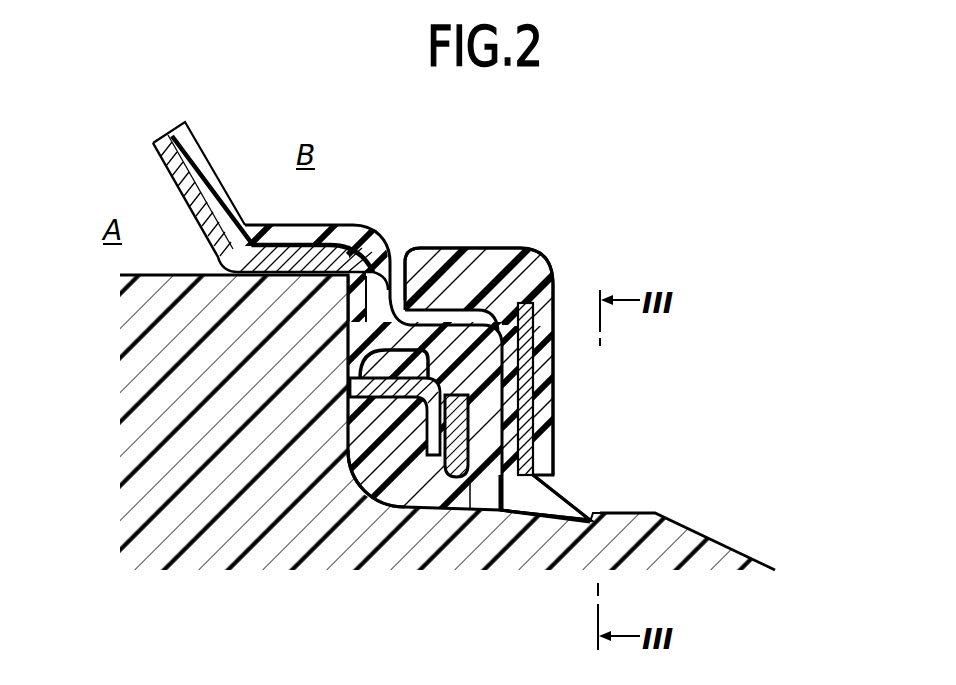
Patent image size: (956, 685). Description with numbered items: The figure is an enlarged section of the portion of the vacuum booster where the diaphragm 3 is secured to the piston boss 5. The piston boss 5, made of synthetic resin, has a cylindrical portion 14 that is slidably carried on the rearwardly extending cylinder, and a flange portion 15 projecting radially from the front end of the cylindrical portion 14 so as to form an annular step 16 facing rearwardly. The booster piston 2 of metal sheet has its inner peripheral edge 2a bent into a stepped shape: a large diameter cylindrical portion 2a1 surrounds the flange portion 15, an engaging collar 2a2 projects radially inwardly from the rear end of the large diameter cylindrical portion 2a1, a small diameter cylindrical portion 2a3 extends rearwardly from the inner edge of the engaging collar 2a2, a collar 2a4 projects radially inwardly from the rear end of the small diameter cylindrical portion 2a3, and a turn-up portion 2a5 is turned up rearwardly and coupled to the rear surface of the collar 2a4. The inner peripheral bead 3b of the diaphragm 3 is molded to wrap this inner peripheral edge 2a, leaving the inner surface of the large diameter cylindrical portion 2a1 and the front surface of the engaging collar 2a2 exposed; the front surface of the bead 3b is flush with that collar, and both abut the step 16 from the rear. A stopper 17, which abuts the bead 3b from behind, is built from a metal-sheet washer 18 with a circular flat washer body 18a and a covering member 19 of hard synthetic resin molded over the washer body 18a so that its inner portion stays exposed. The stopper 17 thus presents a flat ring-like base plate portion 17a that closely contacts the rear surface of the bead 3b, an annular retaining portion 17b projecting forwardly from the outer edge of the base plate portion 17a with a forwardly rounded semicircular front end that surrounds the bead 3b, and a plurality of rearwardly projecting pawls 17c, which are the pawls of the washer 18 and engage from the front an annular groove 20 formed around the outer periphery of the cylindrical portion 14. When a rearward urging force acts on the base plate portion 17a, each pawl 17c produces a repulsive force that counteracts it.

The booster piston 2 is at (180, 178).
The inner peripheral edge 2a is at (375, 387).
The large diameter cylindrical portion 2a1 is at (317, 257).
The engaging collar 2a2 is at (353, 311).
The small diameter cylindrical portion 2a3 is at (352, 407).
The collar 2a4 is at (352, 456).
The turn-up portion 2a5 is at (447, 478).
The diaphragm 3 is at (203, 164).
The inner peripheral bead 3b is at (458, 340).
The piston boss 5 is at (229, 462).
The cylindrical portion 14 is at (712, 566).
The flange portion 15 is at (255, 298).
The annular step 16 is at (340, 463).
The stopper 17 is at (471, 375).
The base plate portion 17a is at (507, 367).
The annular retaining portion 17b is at (433, 267).
The pawls 17c is at (557, 500).
The washer 18 is at (540, 443).
The washer body 18a is at (553, 290).
The covering member 19 is at (543, 388).
The annular groove 20 is at (592, 514).